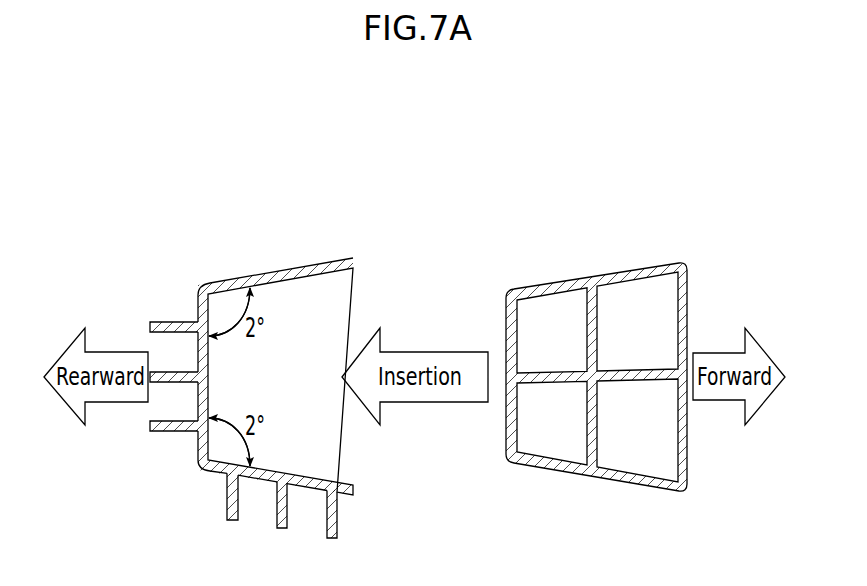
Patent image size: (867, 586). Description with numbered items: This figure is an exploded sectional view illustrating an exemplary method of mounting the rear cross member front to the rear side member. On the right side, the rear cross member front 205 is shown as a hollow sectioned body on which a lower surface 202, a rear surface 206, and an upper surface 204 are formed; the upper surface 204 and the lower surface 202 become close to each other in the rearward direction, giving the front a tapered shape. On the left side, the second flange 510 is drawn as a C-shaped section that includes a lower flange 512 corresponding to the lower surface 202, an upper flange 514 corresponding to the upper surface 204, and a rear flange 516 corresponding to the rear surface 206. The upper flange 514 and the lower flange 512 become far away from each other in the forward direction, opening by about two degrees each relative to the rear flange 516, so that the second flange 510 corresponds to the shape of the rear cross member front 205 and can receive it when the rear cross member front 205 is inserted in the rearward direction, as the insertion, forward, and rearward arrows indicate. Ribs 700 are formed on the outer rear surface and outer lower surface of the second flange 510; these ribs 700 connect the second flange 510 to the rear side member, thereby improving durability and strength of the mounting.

The second flange 510 is at (292, 266).
The lower flange 512 is at (282, 470).
The upper flange 514 is at (305, 278).
The rear flange 516 is at (209, 377).
The ribs 700 is at (177, 322).
The lower surface 202 is at (550, 468).
The upper surface 204 is at (575, 278).
The rear cross member front 205 is at (617, 487).
The rear surface 206 is at (507, 428).